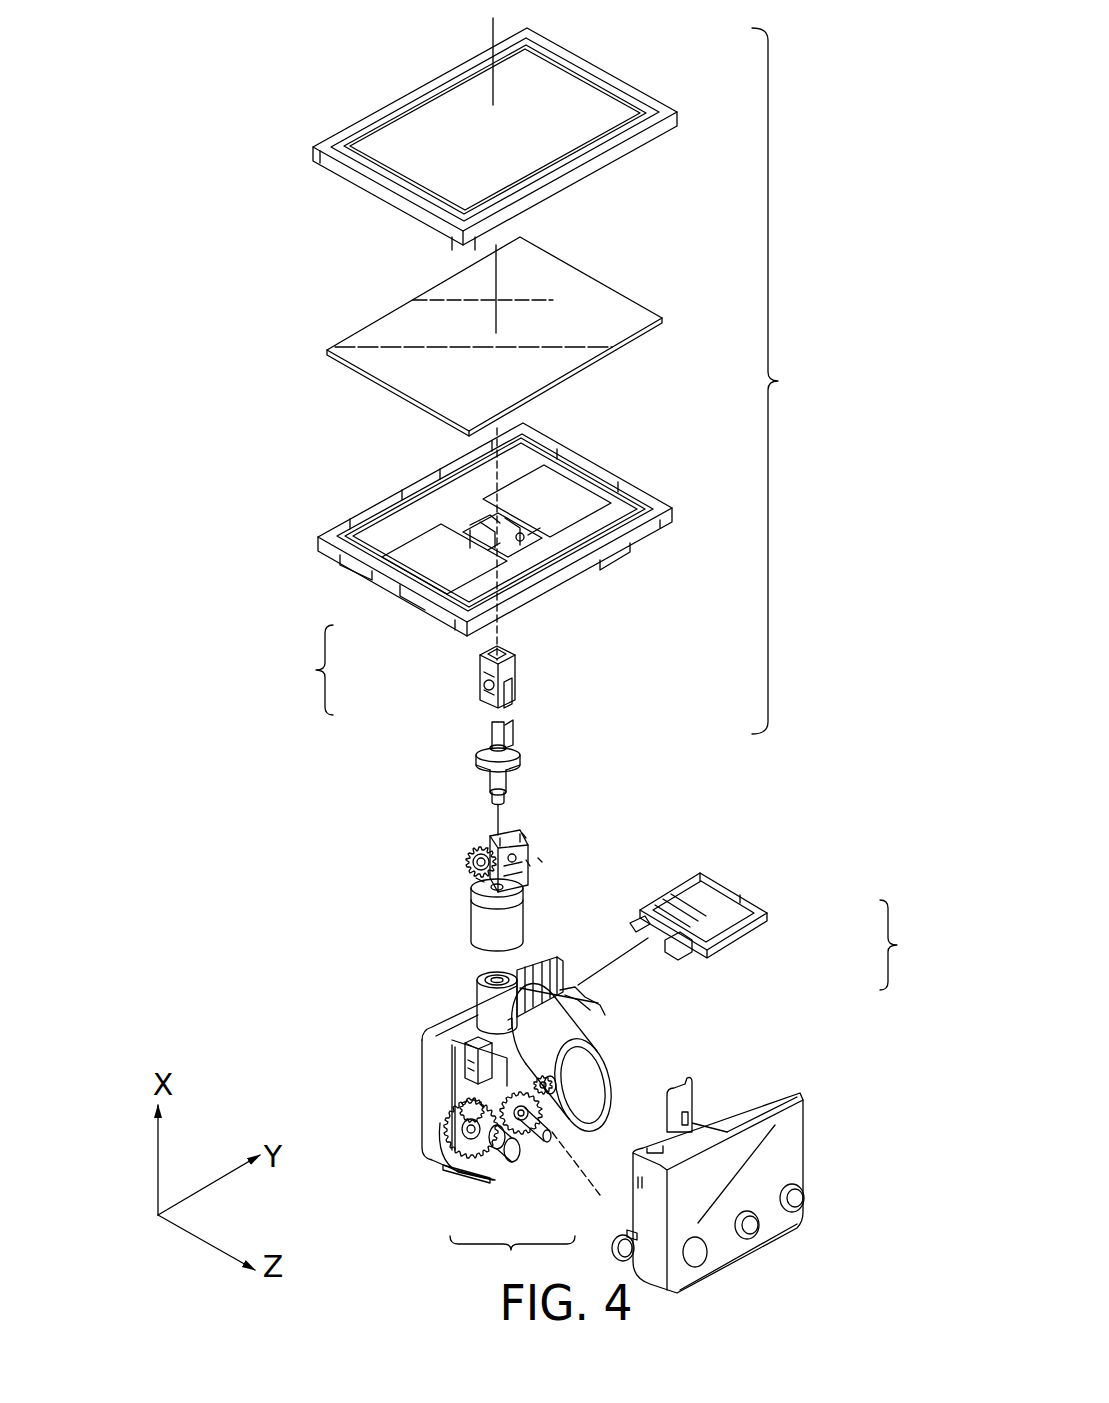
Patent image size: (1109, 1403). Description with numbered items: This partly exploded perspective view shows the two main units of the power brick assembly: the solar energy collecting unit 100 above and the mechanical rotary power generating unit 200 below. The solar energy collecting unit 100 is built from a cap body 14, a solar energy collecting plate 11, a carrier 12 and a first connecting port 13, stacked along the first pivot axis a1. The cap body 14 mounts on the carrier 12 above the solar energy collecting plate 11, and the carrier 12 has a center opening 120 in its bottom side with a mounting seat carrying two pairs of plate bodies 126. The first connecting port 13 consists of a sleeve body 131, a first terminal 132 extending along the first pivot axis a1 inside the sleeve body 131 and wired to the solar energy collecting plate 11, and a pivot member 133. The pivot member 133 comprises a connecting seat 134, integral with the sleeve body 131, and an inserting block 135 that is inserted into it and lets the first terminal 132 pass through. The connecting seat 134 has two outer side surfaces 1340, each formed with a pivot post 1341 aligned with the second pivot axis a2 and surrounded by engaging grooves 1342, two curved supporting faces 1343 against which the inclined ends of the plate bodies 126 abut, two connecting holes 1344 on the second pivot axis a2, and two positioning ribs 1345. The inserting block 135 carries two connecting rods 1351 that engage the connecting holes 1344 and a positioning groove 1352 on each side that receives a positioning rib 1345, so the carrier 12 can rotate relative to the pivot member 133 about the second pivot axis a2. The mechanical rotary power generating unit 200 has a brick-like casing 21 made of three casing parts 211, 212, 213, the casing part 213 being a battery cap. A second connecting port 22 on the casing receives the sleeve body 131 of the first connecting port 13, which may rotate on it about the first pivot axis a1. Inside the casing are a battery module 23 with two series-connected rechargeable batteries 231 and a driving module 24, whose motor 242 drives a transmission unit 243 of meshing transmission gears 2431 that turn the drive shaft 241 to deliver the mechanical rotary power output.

The solar energy collecting unit 100 is at (790, 381).
The cap body 14 is at (608, 66).
The solar energy collecting plate 11 is at (599, 275).
The carrier 12 is at (528, 524).
The center opening 120 is at (512, 541).
The plate bodies 126 is at (500, 536).
The first connecting port 13 is at (658, 765).
The pivot member 133 is at (434, 671).
The inserting block 135 is at (478, 661).
The connecting rods 1351 is at (483, 686).
The positioning groove 1352 is at (514, 702).
The first terminal 132 is at (512, 752).
The connecting seat 134 is at (536, 832).
The outer side surfaces 1340 is at (522, 878).
The pivot post 1341 is at (470, 862).
The engaging grooves 1342 is at (540, 860).
The curved supporting faces 1343 is at (503, 836).
The connecting holes 1344 is at (522, 833).
The positioning ribs 1345 is at (530, 865).
The sleeve body 131 is at (520, 922).
The first pivot axis a1 is at (493, 417).
The second pivot axis a2 is at (470, 872).
The mechanical rotary power generating unit 200 is at (830, 1080).
The brick-like casing 21 is at (677, 1083).
The casing part 211 is at (640, 958).
The casing part 212 is at (800, 1093).
The casing part 213 is at (770, 913).
The second connecting port 22 is at (477, 979).
The battery module 23 is at (608, 1032).
The rechargeable batteries 231 is at (568, 997).
The driving module 24 is at (461, 1178).
The drive shaft 241 is at (498, 1166).
The motor 242 is at (565, 1110).
The transmission unit 243 is at (547, 1120).
The transmission gears 2431 is at (492, 1112).